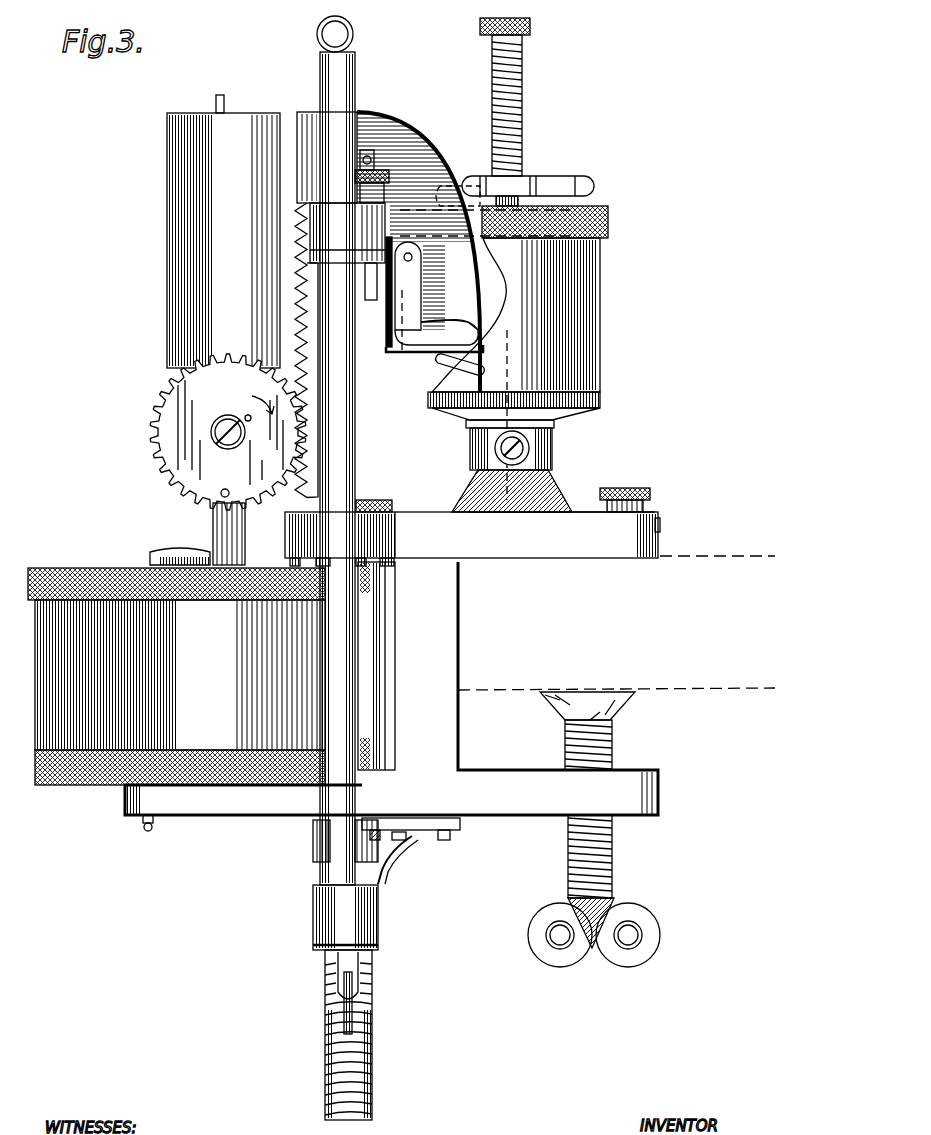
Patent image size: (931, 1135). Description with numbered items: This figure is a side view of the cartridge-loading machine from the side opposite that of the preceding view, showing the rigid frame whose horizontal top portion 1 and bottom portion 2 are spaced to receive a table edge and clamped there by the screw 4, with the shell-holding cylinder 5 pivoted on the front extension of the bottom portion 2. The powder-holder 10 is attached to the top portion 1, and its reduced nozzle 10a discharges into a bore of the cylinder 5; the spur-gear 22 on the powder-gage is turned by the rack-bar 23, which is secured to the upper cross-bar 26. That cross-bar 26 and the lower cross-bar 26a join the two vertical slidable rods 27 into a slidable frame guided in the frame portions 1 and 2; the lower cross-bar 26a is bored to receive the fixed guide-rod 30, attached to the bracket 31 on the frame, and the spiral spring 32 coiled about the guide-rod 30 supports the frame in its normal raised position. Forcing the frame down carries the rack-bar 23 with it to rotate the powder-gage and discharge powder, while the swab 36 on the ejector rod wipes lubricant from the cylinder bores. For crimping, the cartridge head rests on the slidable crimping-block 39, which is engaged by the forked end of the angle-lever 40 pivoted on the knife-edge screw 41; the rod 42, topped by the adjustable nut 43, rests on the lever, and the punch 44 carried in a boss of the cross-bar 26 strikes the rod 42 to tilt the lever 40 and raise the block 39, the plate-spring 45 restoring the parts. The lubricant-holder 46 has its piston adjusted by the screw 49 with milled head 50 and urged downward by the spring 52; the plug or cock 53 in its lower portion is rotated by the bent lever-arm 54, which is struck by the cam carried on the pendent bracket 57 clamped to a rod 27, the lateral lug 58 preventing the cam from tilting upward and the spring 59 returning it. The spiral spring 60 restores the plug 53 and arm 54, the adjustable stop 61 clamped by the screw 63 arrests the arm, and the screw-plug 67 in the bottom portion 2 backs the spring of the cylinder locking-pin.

The horizontal top portion of frame 1 is at (472, 539).
The bottom portion of frame 2 is at (391, 688).
The clamping screw 4 is at (614, 743).
The cylinder 5 is at (176, 676).
The powder-holder 10 is at (223, 231).
The reduced nozzle 10a is at (214, 518).
The spur-gear 22 is at (227, 432).
The rack-bar 23 is at (300, 287).
The cross-bar 26 is at (340, 222).
The lower cross-bar 26a is at (345, 918).
The slidable rods 27 is at (340, 72).
The guide-rod 30 is at (368, 1108).
The bracket 31 is at (387, 862).
The spiral spring 32 is at (336, 1003).
The swab 36 is at (436, 314).
The crimping-block 39 is at (316, 830).
The angle-lever 40 is at (320, 850).
The screw 41 is at (406, 850).
The rod 42 is at (380, 631).
The nut 43 is at (380, 172).
The punch 44 is at (372, 292).
The plate-spring 45 is at (412, 842).
The lubricant-holder 46 is at (518, 313).
The screw 49 is at (492, 96).
The milled head 50 is at (532, 27).
The spring 52 is at (524, 177).
The plug or cock 53 is at (530, 447).
The lever-arm 54 is at (448, 362).
The pendent arm or bracket 57 is at (410, 155).
The lateral lug 58 is at (422, 354).
The spring 59 is at (420, 286).
The spiral spring 60 is at (545, 418).
The stop or gage 61 is at (586, 513).
The screw 63 is at (626, 486).
The screw-plug 67 is at (147, 832).